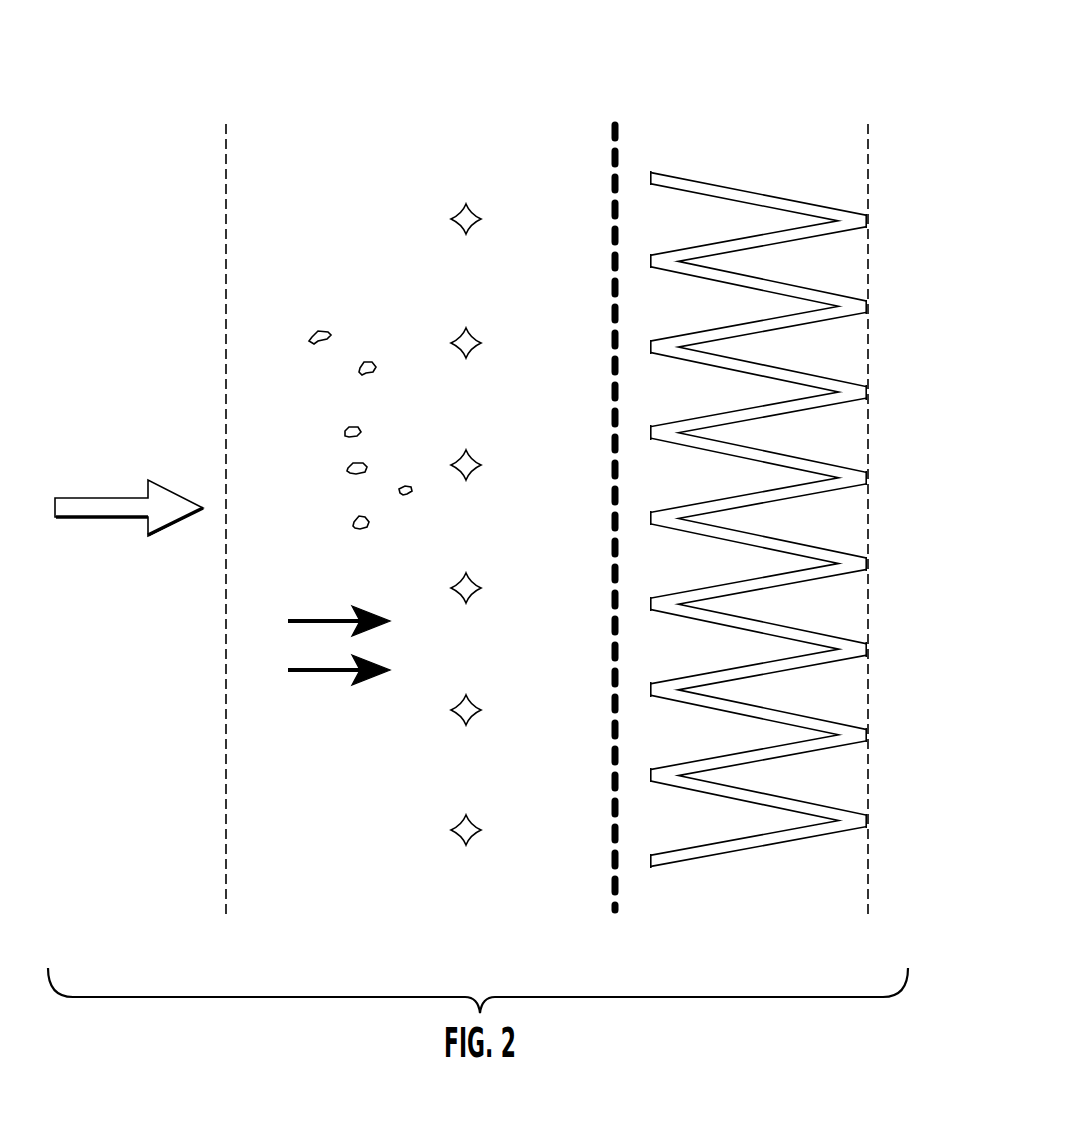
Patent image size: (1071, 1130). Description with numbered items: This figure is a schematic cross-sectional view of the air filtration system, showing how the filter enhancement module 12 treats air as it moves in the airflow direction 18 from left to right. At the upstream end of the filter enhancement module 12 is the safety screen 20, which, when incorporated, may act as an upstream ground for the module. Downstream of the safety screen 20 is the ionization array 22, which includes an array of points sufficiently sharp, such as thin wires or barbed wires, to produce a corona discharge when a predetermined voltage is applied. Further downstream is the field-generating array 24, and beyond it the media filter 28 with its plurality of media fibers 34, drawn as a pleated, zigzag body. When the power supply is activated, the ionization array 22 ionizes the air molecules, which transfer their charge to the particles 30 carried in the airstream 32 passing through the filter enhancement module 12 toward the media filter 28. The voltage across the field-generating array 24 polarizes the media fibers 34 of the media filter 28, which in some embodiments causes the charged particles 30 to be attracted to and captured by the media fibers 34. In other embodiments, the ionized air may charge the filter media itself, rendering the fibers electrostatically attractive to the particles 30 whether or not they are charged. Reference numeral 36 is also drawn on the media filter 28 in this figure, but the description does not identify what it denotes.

The filter enhancement module 12 is at (255, 88).
The airflow direction 18 is at (110, 498).
The safety screen 20 is at (225, 885).
The ionization array 22 is at (460, 825).
The field-generating array 24 is at (613, 882).
The media filter 28 is at (730, 858).
The particles 30 is at (366, 360).
The airstream 32 is at (302, 668).
The media fibers 34 is at (748, 243).
The pleat channels 36 is at (788, 288).